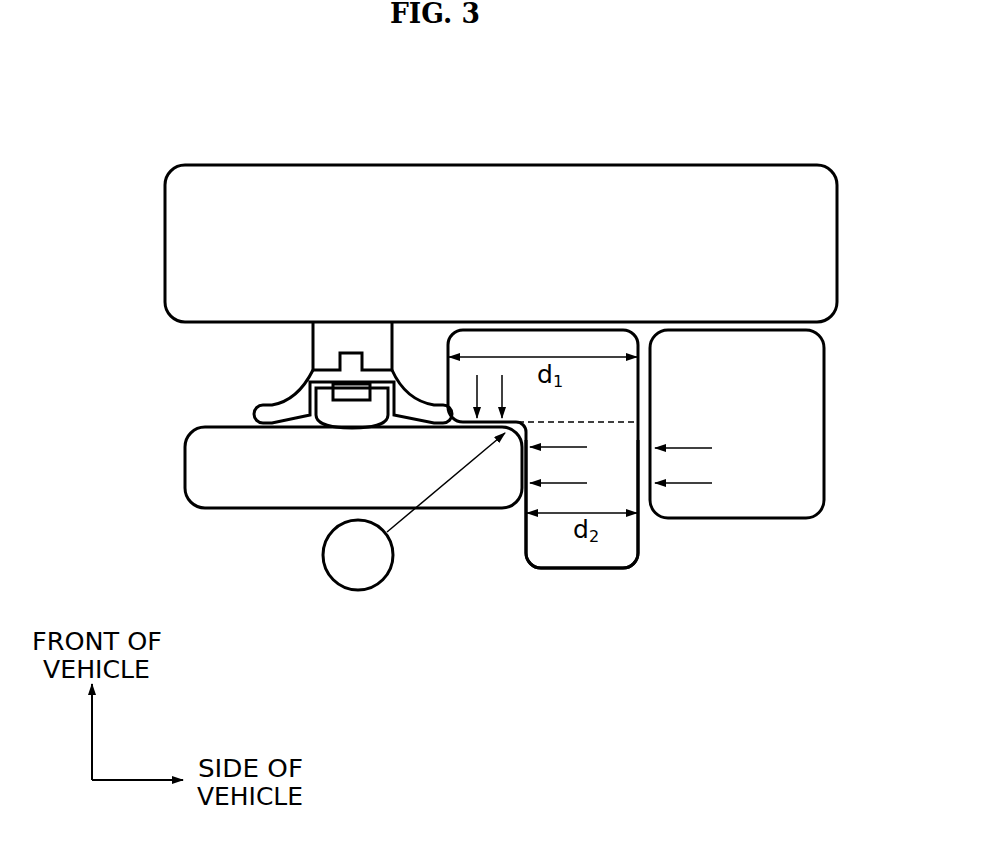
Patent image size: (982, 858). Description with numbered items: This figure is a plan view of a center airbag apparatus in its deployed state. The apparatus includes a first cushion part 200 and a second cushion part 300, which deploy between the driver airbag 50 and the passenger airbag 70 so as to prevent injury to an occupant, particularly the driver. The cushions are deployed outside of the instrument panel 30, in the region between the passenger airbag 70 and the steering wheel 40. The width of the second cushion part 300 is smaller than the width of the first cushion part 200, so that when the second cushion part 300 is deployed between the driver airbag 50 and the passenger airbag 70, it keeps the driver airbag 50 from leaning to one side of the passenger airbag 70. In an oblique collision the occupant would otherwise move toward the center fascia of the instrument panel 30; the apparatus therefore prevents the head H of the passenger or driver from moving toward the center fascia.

The instrument panel 30 is at (476, 200).
The steering wheel 40 is at (282, 408).
The driver airbag 50 is at (197, 475).
The passenger airbag 70 is at (783, 498).
The first cushion part 200 is at (601, 347).
The second cushion part 300 is at (552, 555).
The head H is at (362, 572).